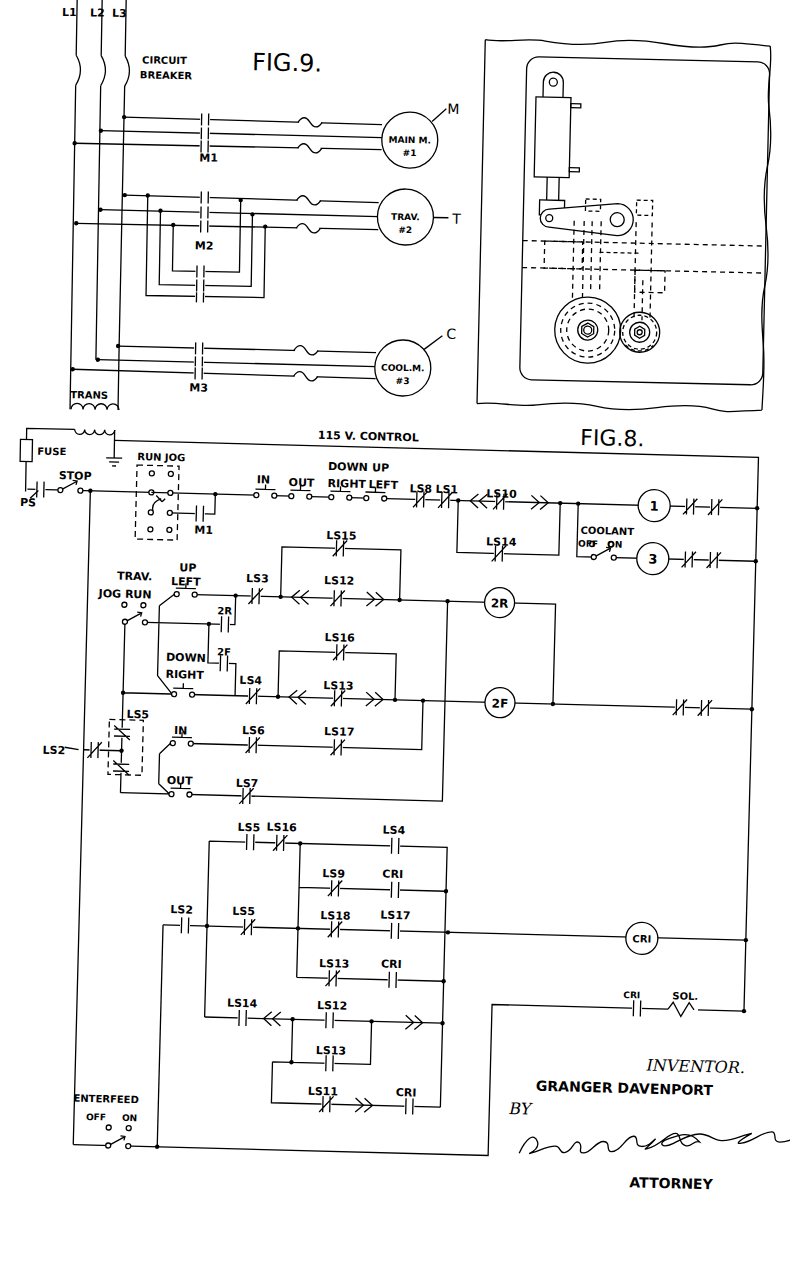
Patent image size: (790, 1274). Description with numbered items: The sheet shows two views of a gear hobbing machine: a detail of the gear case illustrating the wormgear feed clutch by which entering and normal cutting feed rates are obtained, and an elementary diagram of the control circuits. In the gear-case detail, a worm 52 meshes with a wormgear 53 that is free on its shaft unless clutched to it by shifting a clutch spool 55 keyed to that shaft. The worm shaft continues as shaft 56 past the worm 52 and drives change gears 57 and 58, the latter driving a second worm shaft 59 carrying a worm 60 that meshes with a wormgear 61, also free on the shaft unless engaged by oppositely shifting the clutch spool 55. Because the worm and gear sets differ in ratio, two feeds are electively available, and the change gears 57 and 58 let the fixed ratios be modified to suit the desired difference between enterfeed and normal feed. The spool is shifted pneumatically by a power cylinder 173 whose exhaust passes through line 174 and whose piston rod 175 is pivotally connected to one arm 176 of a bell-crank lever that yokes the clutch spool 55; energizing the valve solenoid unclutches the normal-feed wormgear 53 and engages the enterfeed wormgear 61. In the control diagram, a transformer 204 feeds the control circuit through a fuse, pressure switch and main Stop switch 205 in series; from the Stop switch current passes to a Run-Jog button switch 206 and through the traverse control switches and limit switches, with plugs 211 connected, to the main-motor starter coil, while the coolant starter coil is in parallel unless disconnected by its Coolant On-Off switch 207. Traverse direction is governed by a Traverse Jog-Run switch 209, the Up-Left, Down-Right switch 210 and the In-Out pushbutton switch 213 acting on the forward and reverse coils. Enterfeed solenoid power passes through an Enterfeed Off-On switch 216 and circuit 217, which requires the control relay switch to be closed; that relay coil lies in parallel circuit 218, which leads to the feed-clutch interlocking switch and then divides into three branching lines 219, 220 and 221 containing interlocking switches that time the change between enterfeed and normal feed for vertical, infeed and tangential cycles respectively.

In FIG. 9, the transformer 204 is at (109, 419).
In FIG. 9, the main Stop switch 205 is at (69, 503).
In FIG. 9, the Run-Jog button switch 206 is at (132, 522).
In FIG. 9, the Coolant On-Off switch 207 is at (603, 565).
In FIG. 9, the Traverse Jog-Run switch 209 is at (118, 615).
In FIG. 9, the Up-Left, Down-Right switch 210 is at (201, 643).
In FIG. 9, the disconnect plug 211 is at (406, 809).
In FIG. 9, the In-Out pushbutton switch 213 is at (180, 765).
In FIG. 9, the Enterfeed Off-On switch 216 is at (117, 1147).
In FIG. 9, the solenoid circuit 217 is at (253, 1155).
In FIG. 9, the parallel relay circuit 218 is at (170, 1052).
In FIG. 9, the branch line 219 is at (214, 886).
In FIG. 9, the branch circuit 220 is at (216, 934).
In FIG. 9, the third branch circuit 221 is at (213, 984).
In FIG. 8, the worm 52 is at (566, 351).
In FIG. 8, the wormgear 53 is at (591, 200).
In FIG. 8, the clutch spool 55 is at (640, 255).
In FIG. 8, the shaft 56 is at (580, 330).
In FIG. 8, the change gear 57 is at (567, 309).
In FIG. 8, the change gear 58 is at (662, 326).
In FIG. 8, the second worm shaft 59 is at (650, 336).
In FIG. 8, the worm 60 is at (655, 350).
In FIG. 8, the wormgear 61 is at (650, 200).
In FIG. 8, the power cylinder 173 is at (569, 137).
In FIG. 8, the line 174 is at (578, 106).
In FIG. 8, the piston rod 175 is at (559, 190).
In FIG. 8, the arm of bell-crank lever 176 is at (542, 219).